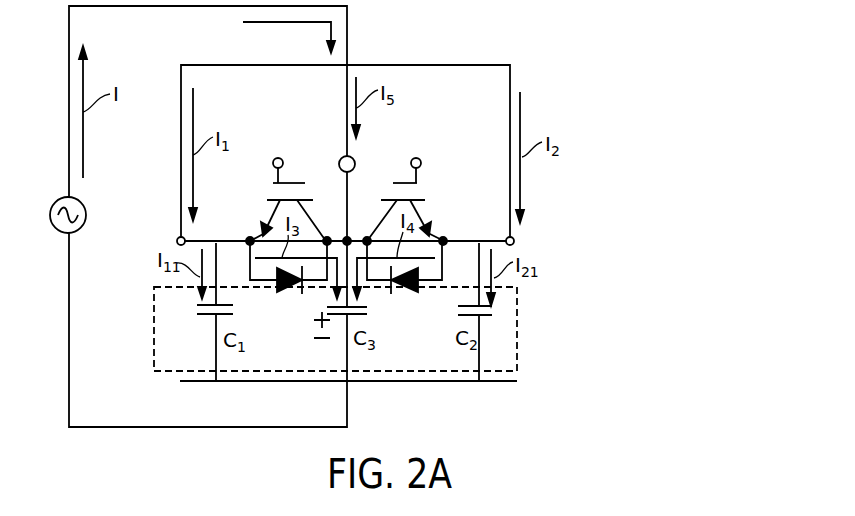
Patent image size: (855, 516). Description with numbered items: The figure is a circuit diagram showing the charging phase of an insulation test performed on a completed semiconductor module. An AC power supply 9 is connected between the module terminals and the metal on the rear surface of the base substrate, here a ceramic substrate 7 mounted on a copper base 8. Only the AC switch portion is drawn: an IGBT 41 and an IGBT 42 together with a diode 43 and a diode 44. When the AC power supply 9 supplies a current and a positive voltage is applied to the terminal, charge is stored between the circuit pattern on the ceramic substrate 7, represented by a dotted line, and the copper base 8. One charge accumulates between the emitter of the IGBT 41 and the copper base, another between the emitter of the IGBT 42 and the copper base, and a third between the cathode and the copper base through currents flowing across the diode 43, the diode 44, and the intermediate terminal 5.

The intermediate terminal 5 is at (355, 163).
The ceramic substrate 7 is at (518, 320).
The copper base 8 is at (448, 381).
The AC power supply 9 is at (86, 203).
The IGBT 41 is at (290, 183).
The IGBT 42 is at (398, 180).
The diode 43 is at (282, 288).
The diode 44 is at (408, 288).